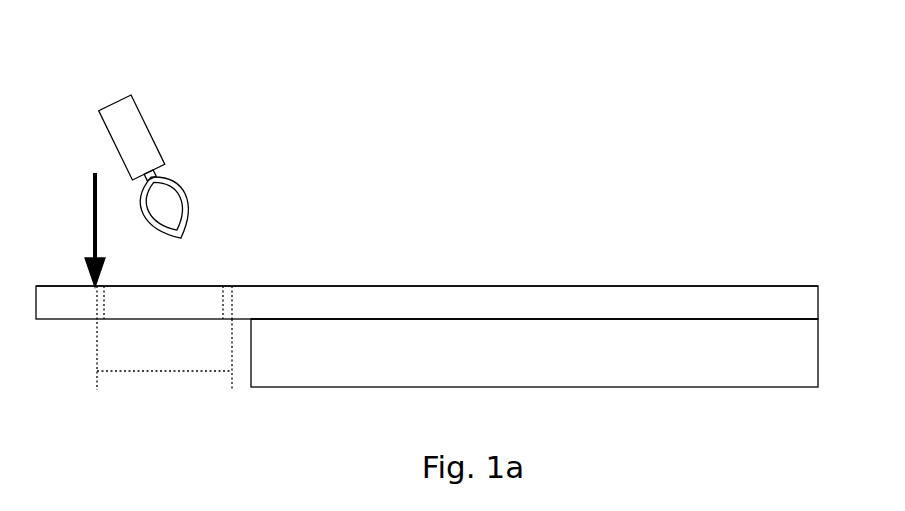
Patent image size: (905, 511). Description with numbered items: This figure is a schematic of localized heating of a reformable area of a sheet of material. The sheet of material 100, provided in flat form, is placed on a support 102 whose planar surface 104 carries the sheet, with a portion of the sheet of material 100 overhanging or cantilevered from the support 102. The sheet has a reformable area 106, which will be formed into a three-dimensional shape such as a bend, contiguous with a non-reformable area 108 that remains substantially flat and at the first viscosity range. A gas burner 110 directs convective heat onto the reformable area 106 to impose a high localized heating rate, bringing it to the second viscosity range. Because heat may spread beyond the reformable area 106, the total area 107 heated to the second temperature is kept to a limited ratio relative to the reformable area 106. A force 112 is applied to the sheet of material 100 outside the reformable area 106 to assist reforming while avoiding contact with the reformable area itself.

The sheet of material 100 is at (523, 295).
The support 102 is at (520, 372).
The planar surface 104 is at (658, 318).
The reformable area 106 is at (202, 293).
The total area heated to the second temperature 107 is at (165, 373).
The non-reformable area 108 is at (68, 290).
The gas burner 110 is at (137, 115).
The applied force 112 is at (93, 186).